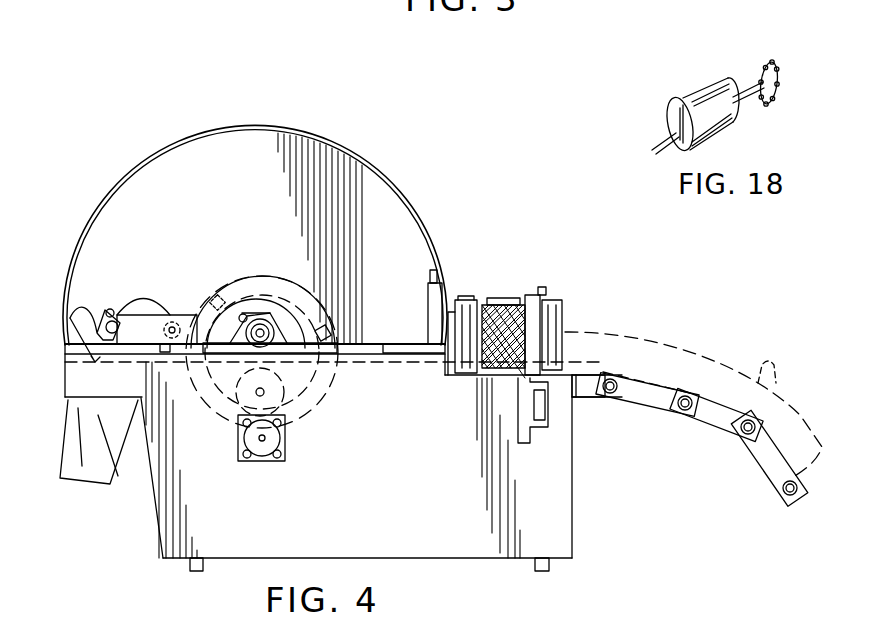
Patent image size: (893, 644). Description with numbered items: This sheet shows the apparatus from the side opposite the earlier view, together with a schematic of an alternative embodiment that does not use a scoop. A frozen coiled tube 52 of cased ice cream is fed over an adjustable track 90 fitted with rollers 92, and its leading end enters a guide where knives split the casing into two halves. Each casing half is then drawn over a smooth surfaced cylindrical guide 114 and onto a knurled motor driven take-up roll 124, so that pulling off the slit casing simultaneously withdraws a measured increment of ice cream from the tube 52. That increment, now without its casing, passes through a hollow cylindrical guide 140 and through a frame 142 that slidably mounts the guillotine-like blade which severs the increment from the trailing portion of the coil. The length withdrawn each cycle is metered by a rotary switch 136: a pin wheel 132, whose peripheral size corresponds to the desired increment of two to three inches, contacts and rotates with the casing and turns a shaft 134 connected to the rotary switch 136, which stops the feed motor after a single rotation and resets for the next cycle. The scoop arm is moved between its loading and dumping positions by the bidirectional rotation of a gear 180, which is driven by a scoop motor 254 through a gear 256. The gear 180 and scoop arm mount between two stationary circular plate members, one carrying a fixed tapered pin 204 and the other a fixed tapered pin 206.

In FIG. 4, the frozen coiled tube 52 is at (693, 404).
In FIG. 4, the adjustable track 90 is at (673, 420).
In FIG. 4, the rollers 92 is at (615, 397).
In FIG. 4, the smooth surfaced cylindrical guide 114 is at (500, 297).
In FIG. 4, the knurled motor driven take-up roll 124 is at (520, 298).
In FIG. 18, the pin wheel 132 is at (775, 60).
In FIG. 18, the shaft 134 is at (740, 103).
In FIG. 18, the rotary switch 136 is at (698, 92).
In FIG. 4, the hollow cylindrical guide 140 is at (465, 297).
In FIG. 4, the frame 142 is at (437, 327).
In FIG. 4, the gear 180 is at (278, 318).
In FIG. 4, the fixed tapered pin 204 is at (330, 331).
In FIG. 4, the fixed tapered pin 206 is at (208, 303).
In FIG. 4, the scoop motor 254 is at (262, 461).
In FIG. 4, the gear 256 is at (276, 352).